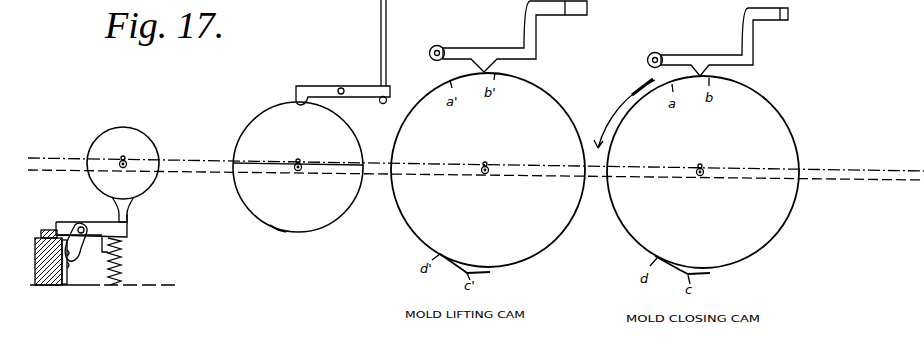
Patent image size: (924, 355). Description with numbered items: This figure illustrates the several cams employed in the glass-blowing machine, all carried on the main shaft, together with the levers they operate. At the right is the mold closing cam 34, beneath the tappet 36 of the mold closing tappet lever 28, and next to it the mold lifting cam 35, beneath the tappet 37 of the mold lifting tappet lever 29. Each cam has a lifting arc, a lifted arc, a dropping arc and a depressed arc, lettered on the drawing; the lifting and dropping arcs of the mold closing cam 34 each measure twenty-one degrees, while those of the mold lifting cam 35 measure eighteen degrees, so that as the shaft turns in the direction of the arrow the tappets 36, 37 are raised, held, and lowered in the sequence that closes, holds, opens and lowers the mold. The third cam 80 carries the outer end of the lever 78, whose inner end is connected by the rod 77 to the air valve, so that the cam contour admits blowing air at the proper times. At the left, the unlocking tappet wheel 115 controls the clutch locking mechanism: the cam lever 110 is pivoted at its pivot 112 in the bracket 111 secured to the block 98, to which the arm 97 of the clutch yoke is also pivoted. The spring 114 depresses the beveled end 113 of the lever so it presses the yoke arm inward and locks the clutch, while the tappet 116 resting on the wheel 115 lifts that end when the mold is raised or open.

The mold closing tappet lever 28 is at (781, 21).
The mold lifting tappet lever 29 is at (566, 16).
The mold closing cam 34 is at (703, 175).
The mold lifting cam 35 is at (488, 173).
The tappet 36 is at (701, 64).
The tappet 37 is at (484, 58).
The rod 77 is at (388, 16).
The lever 78 is at (360, 86).
The cam 80 is at (298, 167).
The arm 97 is at (42, 285).
The block 98 is at (65, 286).
The cam lever 110 is at (122, 271).
The bracket 111 is at (73, 256).
The pivot 112 is at (81, 226).
The beveled end 113 is at (57, 222).
The spring 114 is at (118, 253).
The unlocking tappet wheel 115 is at (146, 183).
The tappet 116 is at (129, 226).